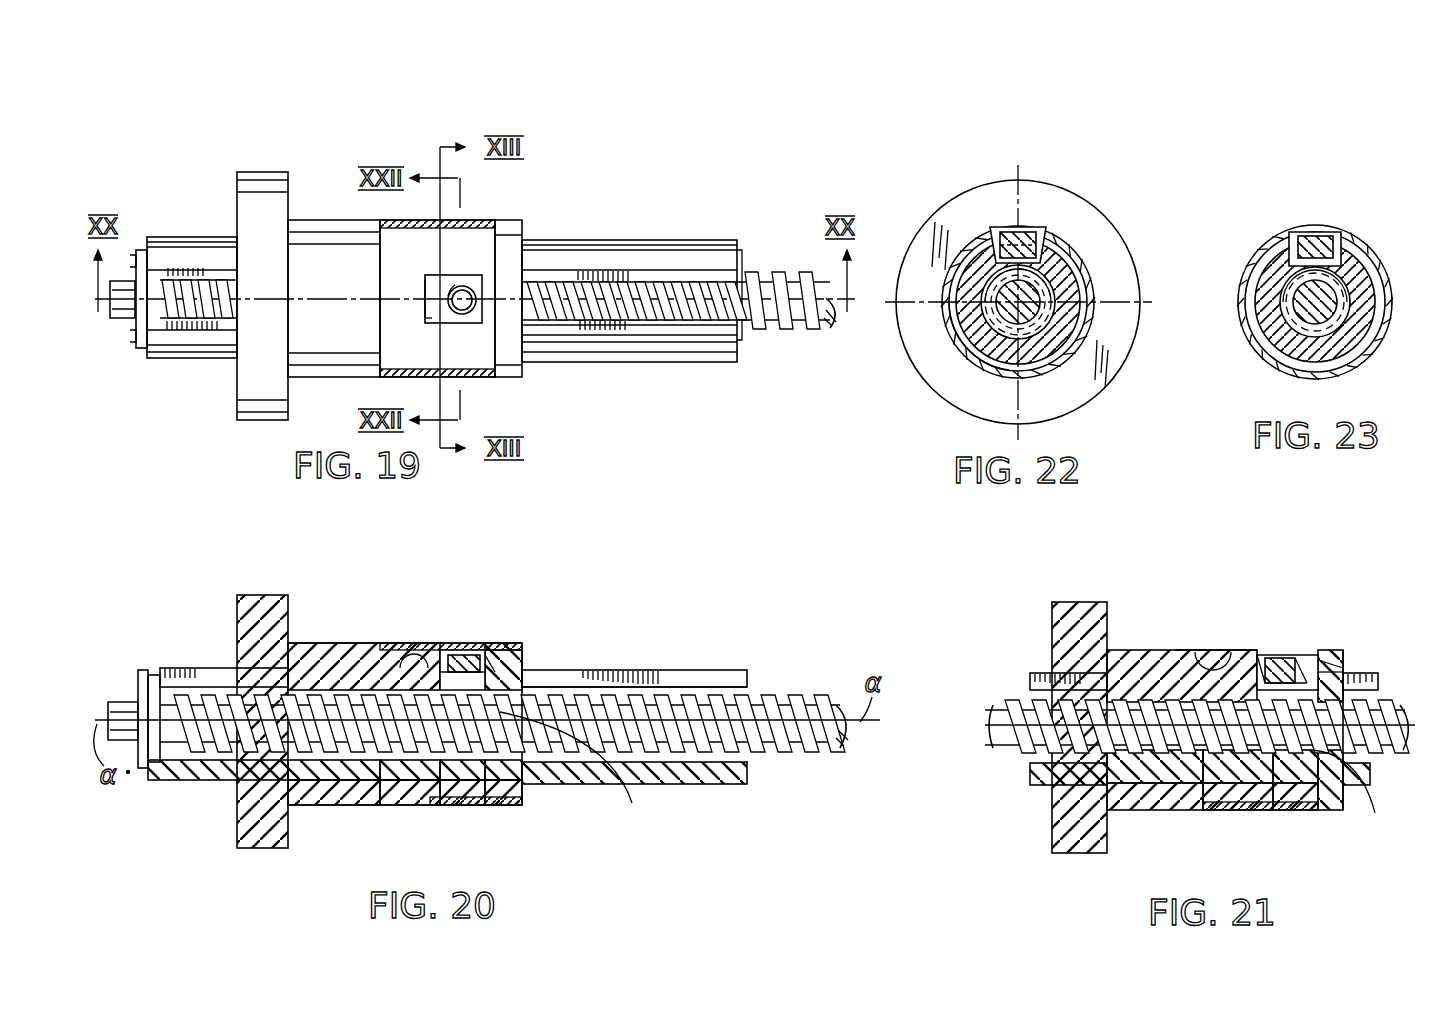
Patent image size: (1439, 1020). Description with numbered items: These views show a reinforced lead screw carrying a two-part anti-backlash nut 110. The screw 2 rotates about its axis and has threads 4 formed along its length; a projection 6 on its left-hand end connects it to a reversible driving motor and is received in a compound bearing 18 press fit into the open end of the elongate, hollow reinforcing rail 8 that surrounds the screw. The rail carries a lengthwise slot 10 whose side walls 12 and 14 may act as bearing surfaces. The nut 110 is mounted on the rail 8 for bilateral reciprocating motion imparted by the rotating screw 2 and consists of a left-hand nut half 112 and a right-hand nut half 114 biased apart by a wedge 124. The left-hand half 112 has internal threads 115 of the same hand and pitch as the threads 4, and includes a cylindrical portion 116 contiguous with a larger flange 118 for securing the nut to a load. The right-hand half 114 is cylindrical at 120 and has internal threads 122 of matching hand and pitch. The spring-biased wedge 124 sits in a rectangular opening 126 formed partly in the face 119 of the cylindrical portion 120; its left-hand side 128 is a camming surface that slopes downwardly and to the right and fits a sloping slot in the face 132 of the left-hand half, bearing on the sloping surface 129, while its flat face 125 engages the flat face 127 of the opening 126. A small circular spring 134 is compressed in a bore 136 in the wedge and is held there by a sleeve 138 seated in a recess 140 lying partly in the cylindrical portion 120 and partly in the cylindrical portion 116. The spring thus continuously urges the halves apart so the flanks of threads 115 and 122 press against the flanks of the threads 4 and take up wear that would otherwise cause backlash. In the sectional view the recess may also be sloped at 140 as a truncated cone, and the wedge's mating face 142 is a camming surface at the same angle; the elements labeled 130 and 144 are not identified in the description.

In FIG. 19, the screw 2 is at (822, 288).
In FIG. 22, the screw 2 is at (998, 314).
In FIG. 23, the screw 2 is at (1302, 293).
In FIG. 20, the screw 2 is at (846, 748).
In FIG. 21, the screw 2 is at (1407, 748).
In FIG. 19, the threads 4 is at (638, 290).
In FIG. 20, the threads 4 is at (666, 700).
In FIG. 21, the threads 4 is at (1165, 703).
In FIG. 19, the projection 6 is at (118, 320).
In FIG. 20, the projection 6 is at (128, 700).
In FIG. 19, the reinforcing rail 8 is at (676, 240).
In FIG. 22, the reinforcing rail 8 is at (1072, 318).
In FIG. 23, the reinforcing rail 8 is at (1262, 300).
In FIG. 20, the reinforcing rail 8 is at (188, 782).
In FIG. 21, the reinforcing rail 8 is at (1204, 729).
In FIG. 19, the slot 10 is at (165, 270).
In FIG. 19, the side wall 12 is at (708, 275).
In FIG. 22, the side wall 12 is at (1040, 232).
In FIG. 23, the side wall 12 is at (1338, 242).
In FIG. 20, the side wall 12 is at (727, 680).
In FIG. 19, the side wall 14 is at (704, 340).
In FIG. 19, the compound bearing 18 is at (136, 262).
In FIG. 20, the compound bearing 18 is at (143, 772).
In FIG. 19, the anti-backlash nut 110 is at (336, 165).
In FIG. 20, the anti-backlash nut 110 is at (364, 596).
In FIG. 20, the left-hand nut half 112 is at (333, 642).
In FIG. 21, the left-hand nut half 112 is at (1137, 650).
In FIG. 20, the right-hand nut half 114 is at (535, 624).
In FIG. 21, the right-hand nut half 114 is at (1337, 817).
In FIG. 20, the internal threads 115 is at (367, 800).
In FIG. 21, the internal threads 115 is at (1160, 763).
In FIG. 22, the cylindrical portion 116 is at (980, 357).
In FIG. 23, the cylindrical portion 116 is at (1272, 355).
In FIG. 20, the cylindrical portion 116 is at (323, 805).
In FIG. 19, the flange 118 is at (258, 172).
In FIG. 22, the flange 118 is at (1087, 403).
In FIG. 20, the flange 118 is at (258, 596).
In FIG. 21, the flange 118 is at (1078, 602).
In FIG. 20, the face 119 is at (410, 792).
In FIG. 19, the cylindrical portion 120 is at (513, 237).
In FIG. 21, the cylindrical portion 120 is at (1328, 812).
In FIG. 20, the internal threads 122 is at (580, 770).
In FIG. 21, the internal threads 122 is at (1359, 789).
In FIG. 19, the wedge 124 is at (430, 303).
In FIG. 22, the wedge 124 is at (998, 232).
In FIG. 23, the wedge 124 is at (1293, 234).
In FIG. 20, the wedge 124 is at (438, 650).
In FIG. 21, the wedge 124 is at (1287, 672).
In FIG. 20, the flat face 125 is at (495, 656).
In FIG. 21, the flat face 125 is at (1289, 655).
In FIG. 19, the rectangular opening 126 is at (455, 312).
In FIG. 21, the rectangular opening 126 is at (1307, 660).
In FIG. 19, the flat face 127 is at (508, 247).
In FIG. 20, the flat face 127 is at (512, 652).
In FIG. 19, the camming surface 128 is at (425, 290).
In FIG. 20, the camming surface 128 is at (412, 668).
In FIG. 21, the camming surface 128 is at (1213, 657).
In FIG. 21, the sloping surface 129 is at (1250, 657).
In FIG. 19, the pocket corner 130 is at (432, 318).
In FIG. 20, the face 132 is at (458, 790).
In FIG. 21, the face 132 is at (1270, 810).
In FIG. 19, the spring 134 is at (462, 286).
In FIG. 22, the spring 134 is at (1022, 228).
In FIG. 23, the spring 134 is at (1316, 234).
In FIG. 20, the spring 134 is at (467, 655).
In FIG. 21, the spring 134 is at (1275, 655).
In FIG. 19, the bore 136 is at (450, 285).
In FIG. 21, the bore 136 is at (1180, 650).
In FIG. 19, the sleeve 138 is at (478, 222).
In FIG. 22, the sleeve 138 is at (1088, 270).
In FIG. 23, the sleeve 138 is at (1367, 363).
In FIG. 20, the sleeve 138 is at (480, 646).
In FIG. 21, the sleeve 138 is at (1227, 812).
In FIG. 20, the recess 140 is at (412, 648).
In FIG. 21, the recess 140 is at (1307, 812).
In FIG. 21, the mating face 142 is at (1343, 667).
In FIG. 21, the shoulder 144 is at (1343, 674).